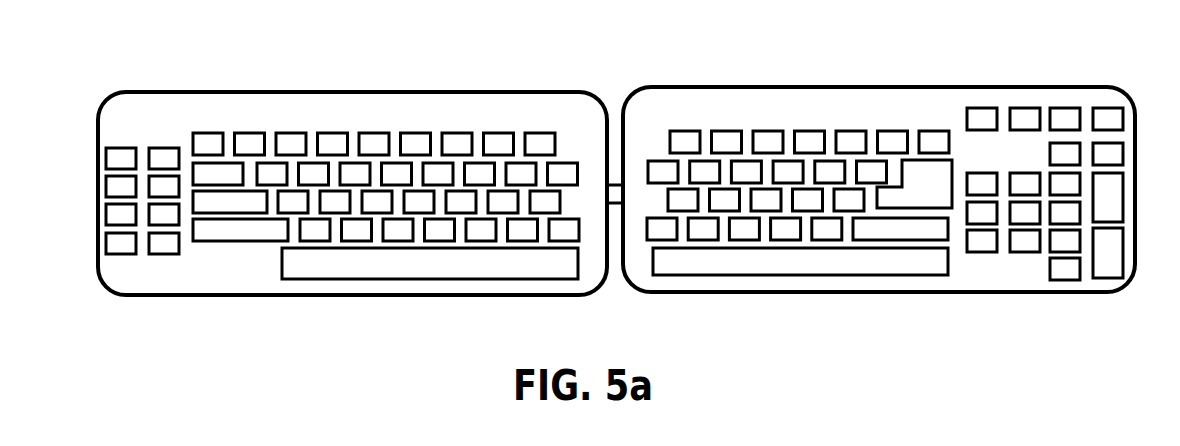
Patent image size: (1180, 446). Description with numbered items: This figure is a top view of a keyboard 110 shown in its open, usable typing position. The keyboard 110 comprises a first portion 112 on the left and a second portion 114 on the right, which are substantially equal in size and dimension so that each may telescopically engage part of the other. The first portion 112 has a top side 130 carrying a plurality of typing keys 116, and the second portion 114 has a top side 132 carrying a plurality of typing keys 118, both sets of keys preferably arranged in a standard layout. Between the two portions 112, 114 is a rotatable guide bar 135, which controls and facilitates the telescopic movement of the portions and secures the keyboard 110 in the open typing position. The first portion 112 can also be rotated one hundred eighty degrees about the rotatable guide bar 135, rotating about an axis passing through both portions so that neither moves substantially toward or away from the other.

The keyboard 110 is at (165, 84).
The first portion 112 is at (200, 92).
The second portion 114 is at (698, 88).
The typing keys 116 is at (452, 133).
The typing keys 118 is at (1020, 108).
The top side 130 is at (276, 119).
The top side 132 is at (856, 116).
The rotatable guide bar 135 is at (616, 203).